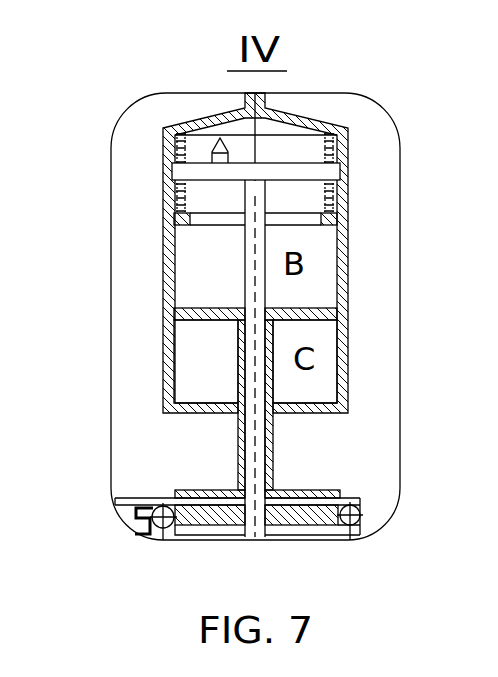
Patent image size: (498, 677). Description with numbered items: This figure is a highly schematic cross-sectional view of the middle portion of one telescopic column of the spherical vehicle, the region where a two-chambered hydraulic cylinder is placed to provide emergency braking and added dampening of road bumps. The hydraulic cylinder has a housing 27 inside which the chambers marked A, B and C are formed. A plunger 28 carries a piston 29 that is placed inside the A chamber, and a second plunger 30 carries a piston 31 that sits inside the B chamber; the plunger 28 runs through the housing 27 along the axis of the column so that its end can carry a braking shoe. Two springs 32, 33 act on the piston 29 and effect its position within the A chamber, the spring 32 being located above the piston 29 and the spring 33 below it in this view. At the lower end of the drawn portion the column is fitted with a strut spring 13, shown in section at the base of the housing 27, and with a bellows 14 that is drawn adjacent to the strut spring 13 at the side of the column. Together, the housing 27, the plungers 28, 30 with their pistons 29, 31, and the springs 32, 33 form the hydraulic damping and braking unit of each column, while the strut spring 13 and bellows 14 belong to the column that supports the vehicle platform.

The strut spring 13 is at (165, 529).
The bellows 14 is at (150, 520).
The housing 27 is at (343, 188).
The plunger 28 is at (250, 270).
The piston 29 is at (197, 175).
The plunger 30 is at (240, 372).
The piston 31 is at (298, 315).
The spring 32 is at (178, 147).
The spring 33 is at (179, 205).